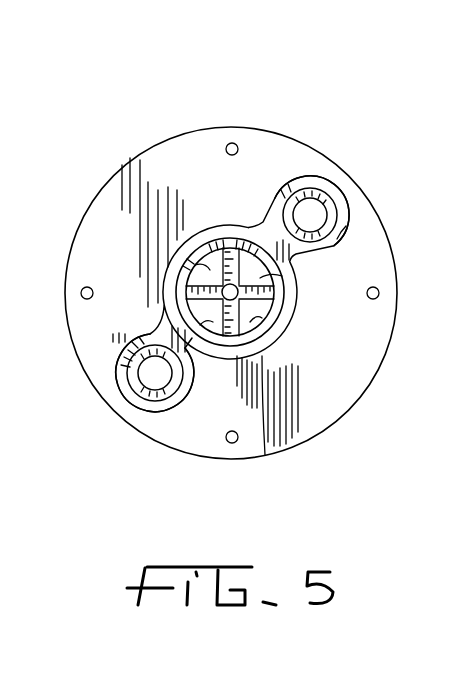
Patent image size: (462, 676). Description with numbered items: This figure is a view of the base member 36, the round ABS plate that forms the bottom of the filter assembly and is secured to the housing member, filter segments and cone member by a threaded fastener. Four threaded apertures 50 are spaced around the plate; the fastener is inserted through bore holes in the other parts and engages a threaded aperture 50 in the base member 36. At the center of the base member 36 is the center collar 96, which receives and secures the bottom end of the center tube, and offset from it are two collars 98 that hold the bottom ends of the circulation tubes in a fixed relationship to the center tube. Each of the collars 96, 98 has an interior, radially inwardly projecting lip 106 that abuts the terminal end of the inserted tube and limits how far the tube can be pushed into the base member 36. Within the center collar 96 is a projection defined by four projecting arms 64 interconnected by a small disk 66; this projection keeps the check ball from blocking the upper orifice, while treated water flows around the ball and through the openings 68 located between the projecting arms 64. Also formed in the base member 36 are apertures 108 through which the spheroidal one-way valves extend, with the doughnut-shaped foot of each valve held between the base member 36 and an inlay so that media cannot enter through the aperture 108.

The base member 36 is at (160, 452).
The threaded aperture 50 is at (230, 143).
The projecting arms 64 is at (208, 272).
The small disk 66 is at (234, 285).
The openings 68 is at (205, 255).
The center collar 96 is at (205, 357).
The collars 98 is at (303, 180).
The radially inwardly projecting lip 106 is at (316, 190).
The aperture 108 is at (318, 214).